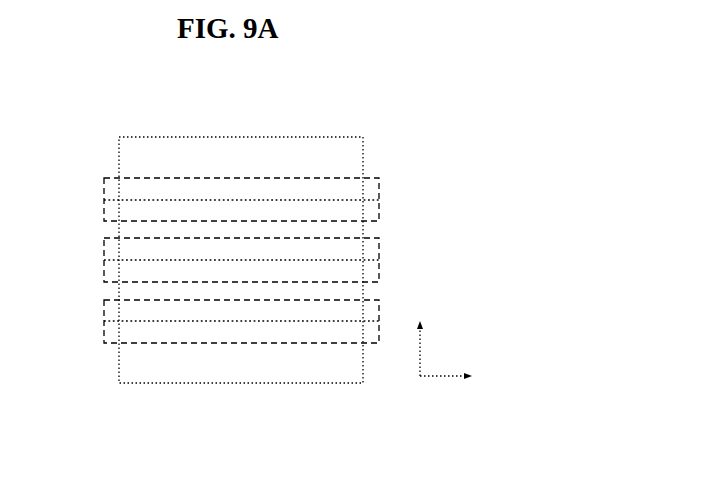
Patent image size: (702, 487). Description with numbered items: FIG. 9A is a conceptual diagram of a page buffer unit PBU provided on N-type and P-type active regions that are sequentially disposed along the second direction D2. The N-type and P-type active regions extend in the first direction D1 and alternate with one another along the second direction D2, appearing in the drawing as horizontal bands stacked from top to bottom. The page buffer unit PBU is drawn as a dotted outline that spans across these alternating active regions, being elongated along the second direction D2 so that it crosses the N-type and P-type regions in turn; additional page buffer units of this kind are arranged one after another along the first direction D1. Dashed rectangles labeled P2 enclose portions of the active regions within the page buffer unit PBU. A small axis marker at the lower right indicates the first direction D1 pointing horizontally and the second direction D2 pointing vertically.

The page buffer unit PBU is at (273, 178).
The second pattern P2 is at (380, 200).
The first direction D1 is at (457, 377).
The second direction D2 is at (416, 340).